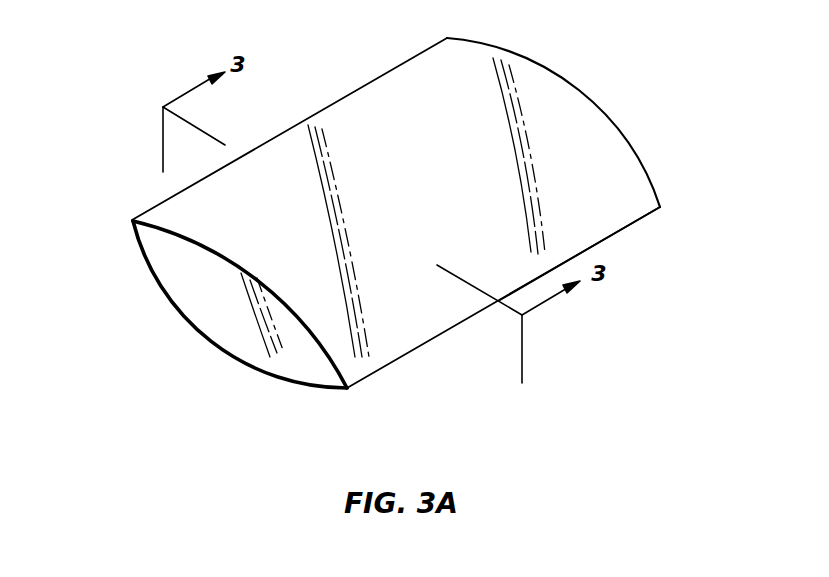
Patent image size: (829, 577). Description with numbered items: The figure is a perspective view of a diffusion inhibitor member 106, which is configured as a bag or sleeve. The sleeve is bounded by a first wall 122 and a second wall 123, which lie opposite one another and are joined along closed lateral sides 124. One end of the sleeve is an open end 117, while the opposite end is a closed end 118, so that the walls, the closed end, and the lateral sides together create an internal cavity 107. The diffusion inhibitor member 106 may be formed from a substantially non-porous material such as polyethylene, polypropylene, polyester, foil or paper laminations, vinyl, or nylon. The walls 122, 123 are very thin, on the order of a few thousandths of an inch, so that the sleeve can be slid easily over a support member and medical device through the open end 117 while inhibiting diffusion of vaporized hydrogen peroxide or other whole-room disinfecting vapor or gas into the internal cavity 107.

The diffusion inhibitor member 106 is at (565, 144).
The internal cavity 107 is at (247, 319).
The open end 117 is at (177, 277).
The closed end 118 is at (542, 65).
The first wall 122 is at (301, 359).
The second wall 123 is at (612, 198).
The closed lateral sides 124 is at (349, 90).